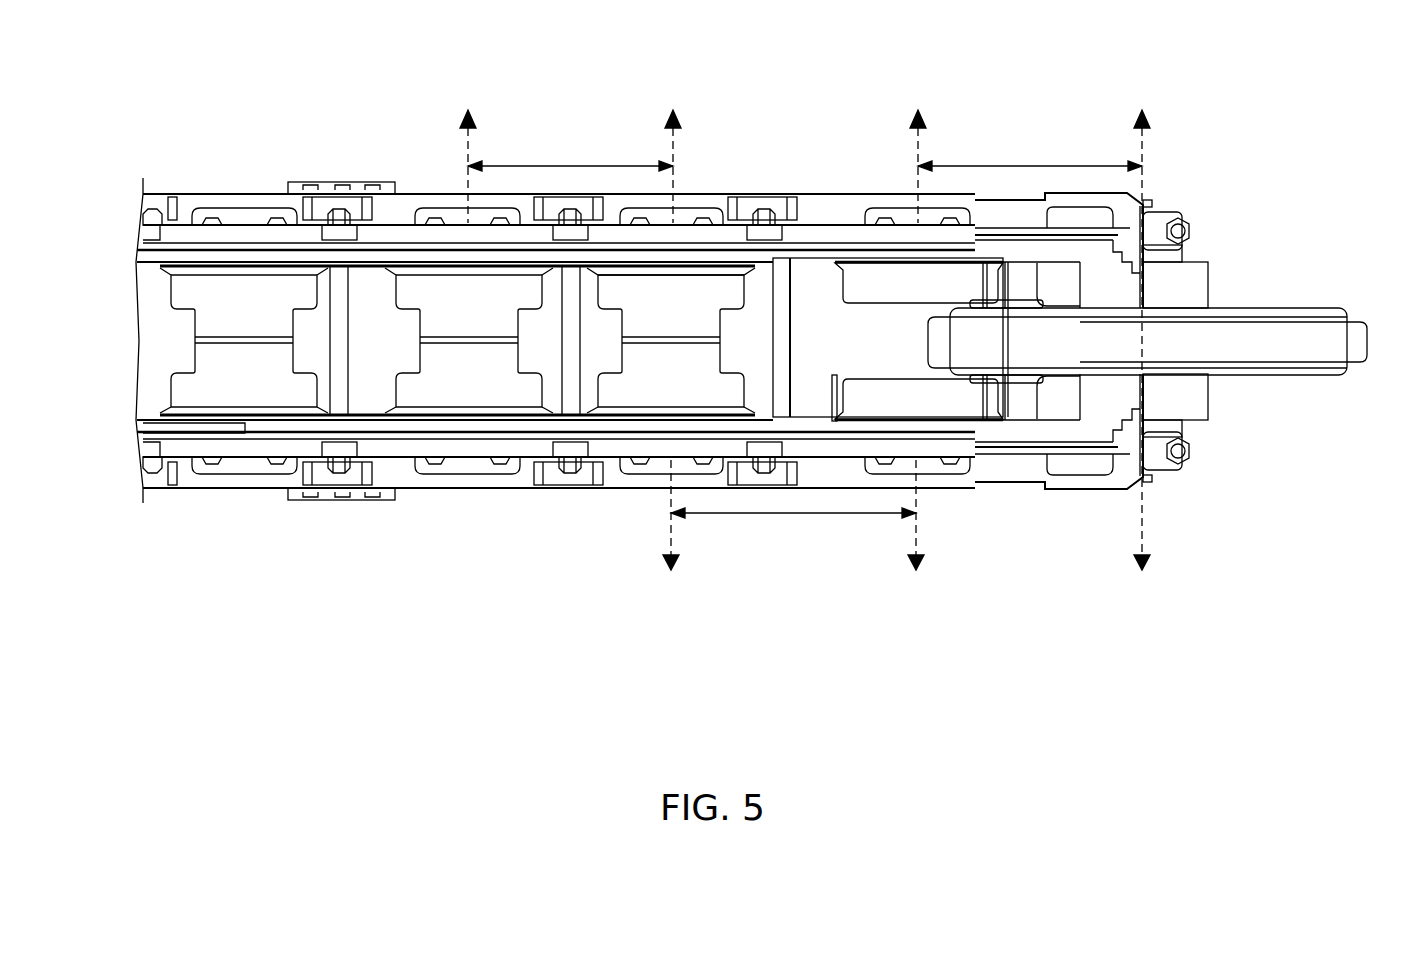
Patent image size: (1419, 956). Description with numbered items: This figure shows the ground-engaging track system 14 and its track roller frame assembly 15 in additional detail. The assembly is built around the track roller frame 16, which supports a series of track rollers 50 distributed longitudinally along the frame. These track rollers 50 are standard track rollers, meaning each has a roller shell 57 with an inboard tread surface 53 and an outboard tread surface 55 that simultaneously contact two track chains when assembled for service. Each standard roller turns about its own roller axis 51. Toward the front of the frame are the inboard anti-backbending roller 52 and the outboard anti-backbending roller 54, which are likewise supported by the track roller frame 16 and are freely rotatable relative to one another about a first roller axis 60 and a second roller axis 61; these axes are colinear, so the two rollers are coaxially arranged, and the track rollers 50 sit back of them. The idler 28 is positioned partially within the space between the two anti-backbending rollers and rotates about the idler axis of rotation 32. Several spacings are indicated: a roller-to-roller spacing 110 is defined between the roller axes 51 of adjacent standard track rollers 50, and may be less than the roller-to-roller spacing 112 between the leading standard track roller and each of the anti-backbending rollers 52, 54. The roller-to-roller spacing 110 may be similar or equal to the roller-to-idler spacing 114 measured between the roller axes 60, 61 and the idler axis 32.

The ground-engaging track system 14 is at (1116, 96).
The track roller frame assembly 15 is at (248, 176).
The track roller frame 16 is at (813, 232).
The idler 28 is at (1272, 377).
The idler axis of rotation 32 is at (1142, 138).
The track rollers 50 is at (462, 397).
The roller axis 51 is at (468, 138).
The inboard anti-backbending roller 52 is at (851, 286).
The inboard tread surface 53 is at (678, 282).
The outboard anti-backbending roller 54 is at (855, 396).
The outboard tread surface 55 is at (612, 383).
The roller shell 57 is at (704, 357).
The first roller axis 60 is at (918, 138).
The second roller axis 61 is at (916, 538).
The roller-to-roller spacing 110 is at (566, 165).
The roller-to-roller spacing 112 is at (788, 514).
The roller-to-idler spacing 114 is at (1036, 165).